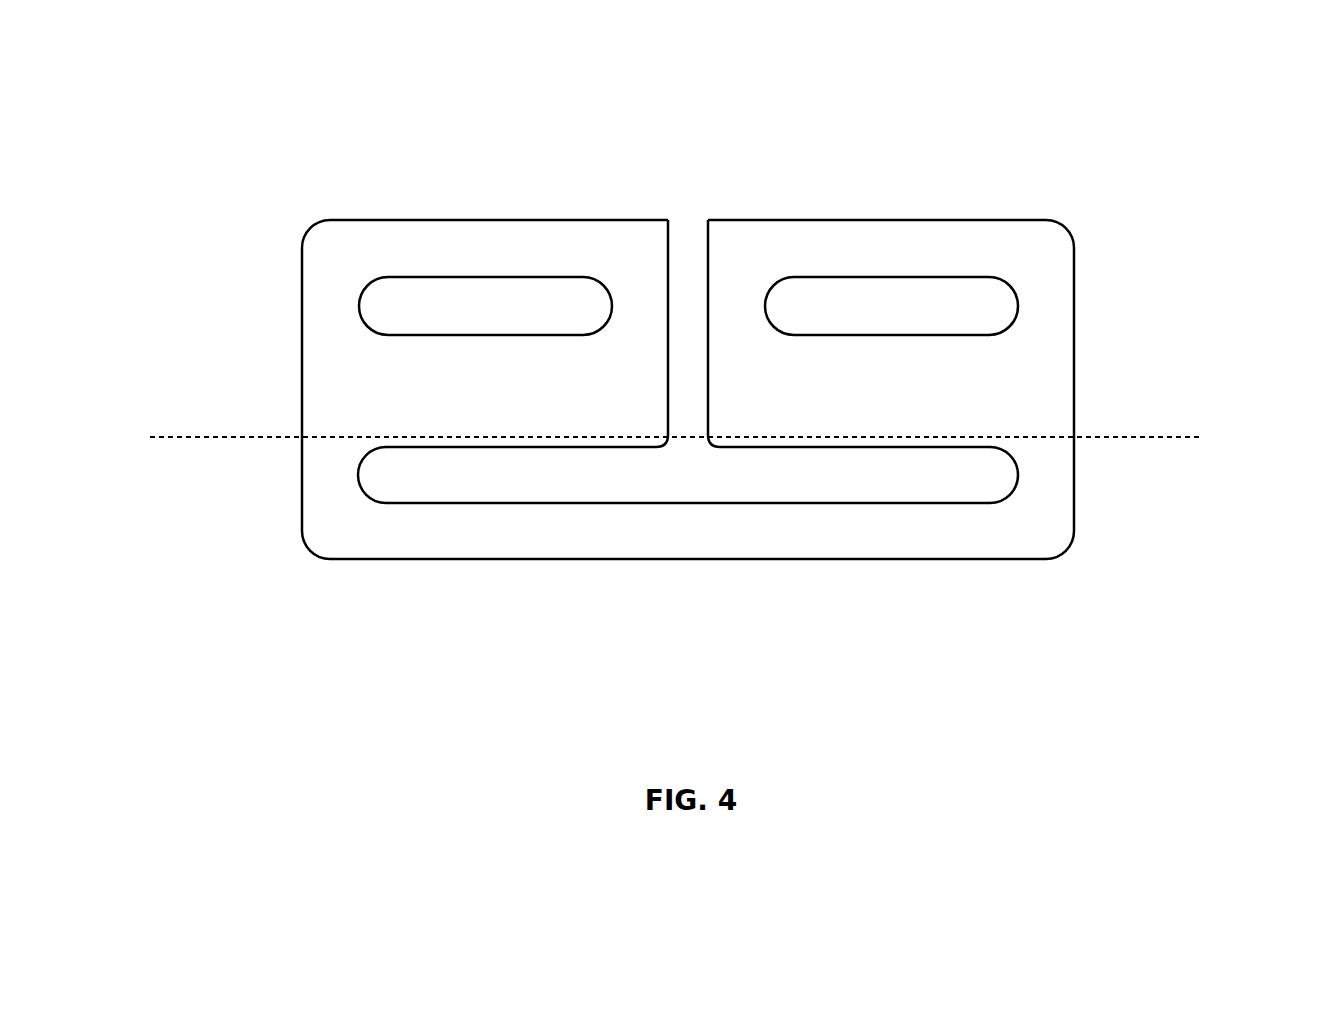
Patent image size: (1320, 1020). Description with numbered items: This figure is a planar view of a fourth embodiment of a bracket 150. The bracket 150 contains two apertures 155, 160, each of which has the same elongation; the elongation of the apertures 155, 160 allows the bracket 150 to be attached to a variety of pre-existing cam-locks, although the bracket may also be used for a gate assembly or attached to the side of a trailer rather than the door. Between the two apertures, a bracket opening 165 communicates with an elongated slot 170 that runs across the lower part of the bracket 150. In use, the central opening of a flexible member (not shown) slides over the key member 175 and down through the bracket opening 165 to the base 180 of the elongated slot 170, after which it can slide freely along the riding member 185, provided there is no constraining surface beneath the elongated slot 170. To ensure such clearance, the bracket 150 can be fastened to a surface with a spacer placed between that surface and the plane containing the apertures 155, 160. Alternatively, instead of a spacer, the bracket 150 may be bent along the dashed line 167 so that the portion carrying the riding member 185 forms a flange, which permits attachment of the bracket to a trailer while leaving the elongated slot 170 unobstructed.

The bracket 150 is at (1072, 614).
The aperture 155 is at (896, 289).
The aperture 160 is at (437, 290).
The bracket opening 165 is at (688, 233).
The line 167 is at (1165, 442).
The elongated slot 170 is at (450, 485).
The key member 175 is at (633, 258).
The base 180 is at (370, 472).
The riding member 185 is at (687, 537).